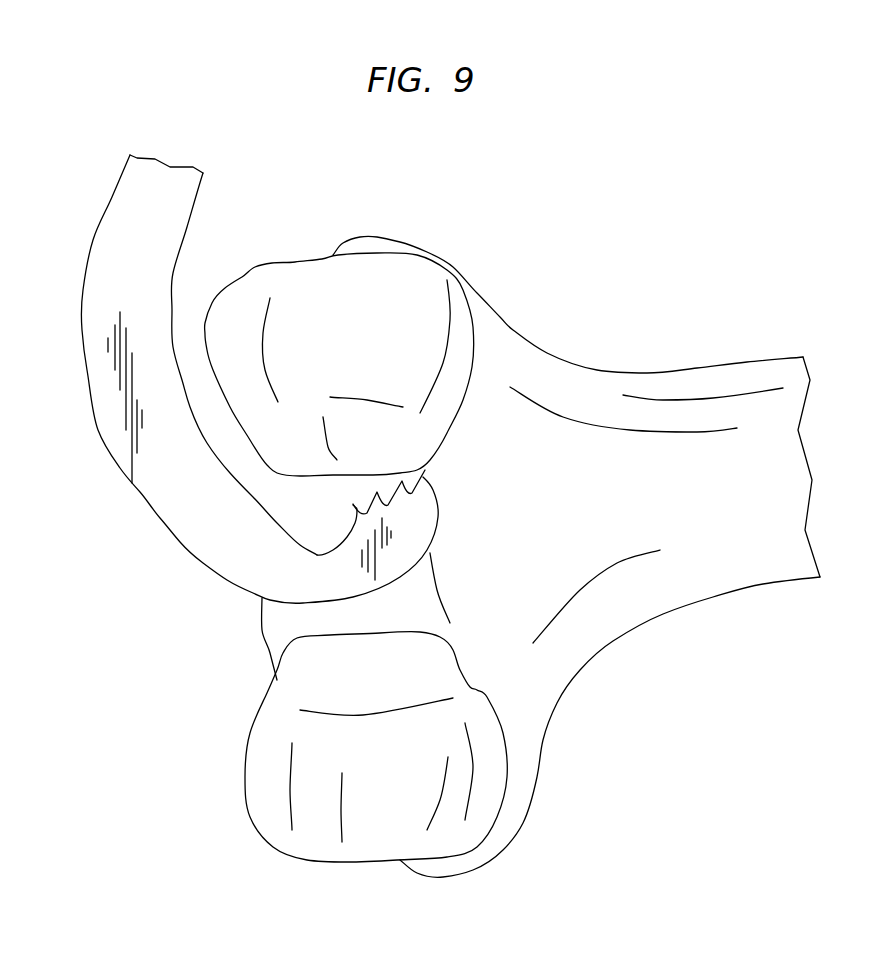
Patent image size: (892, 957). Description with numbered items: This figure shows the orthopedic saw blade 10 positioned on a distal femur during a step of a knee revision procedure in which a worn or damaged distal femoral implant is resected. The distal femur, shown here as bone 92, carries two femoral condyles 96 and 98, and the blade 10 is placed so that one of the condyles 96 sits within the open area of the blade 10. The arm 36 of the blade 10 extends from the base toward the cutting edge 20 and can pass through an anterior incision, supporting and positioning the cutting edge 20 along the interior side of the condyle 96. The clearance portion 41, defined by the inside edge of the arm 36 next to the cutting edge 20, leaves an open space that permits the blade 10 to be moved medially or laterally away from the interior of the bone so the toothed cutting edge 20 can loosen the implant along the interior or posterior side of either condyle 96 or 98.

The saw blade 10 is at (113, 186).
The cutting edge 20 is at (404, 521).
The arm 36 is at (102, 432).
The clearance portion 41 is at (307, 518).
The femur bone 92 is at (687, 512).
The femoral condyle 96 is at (358, 369).
The femoral condyle 98 is at (370, 762).